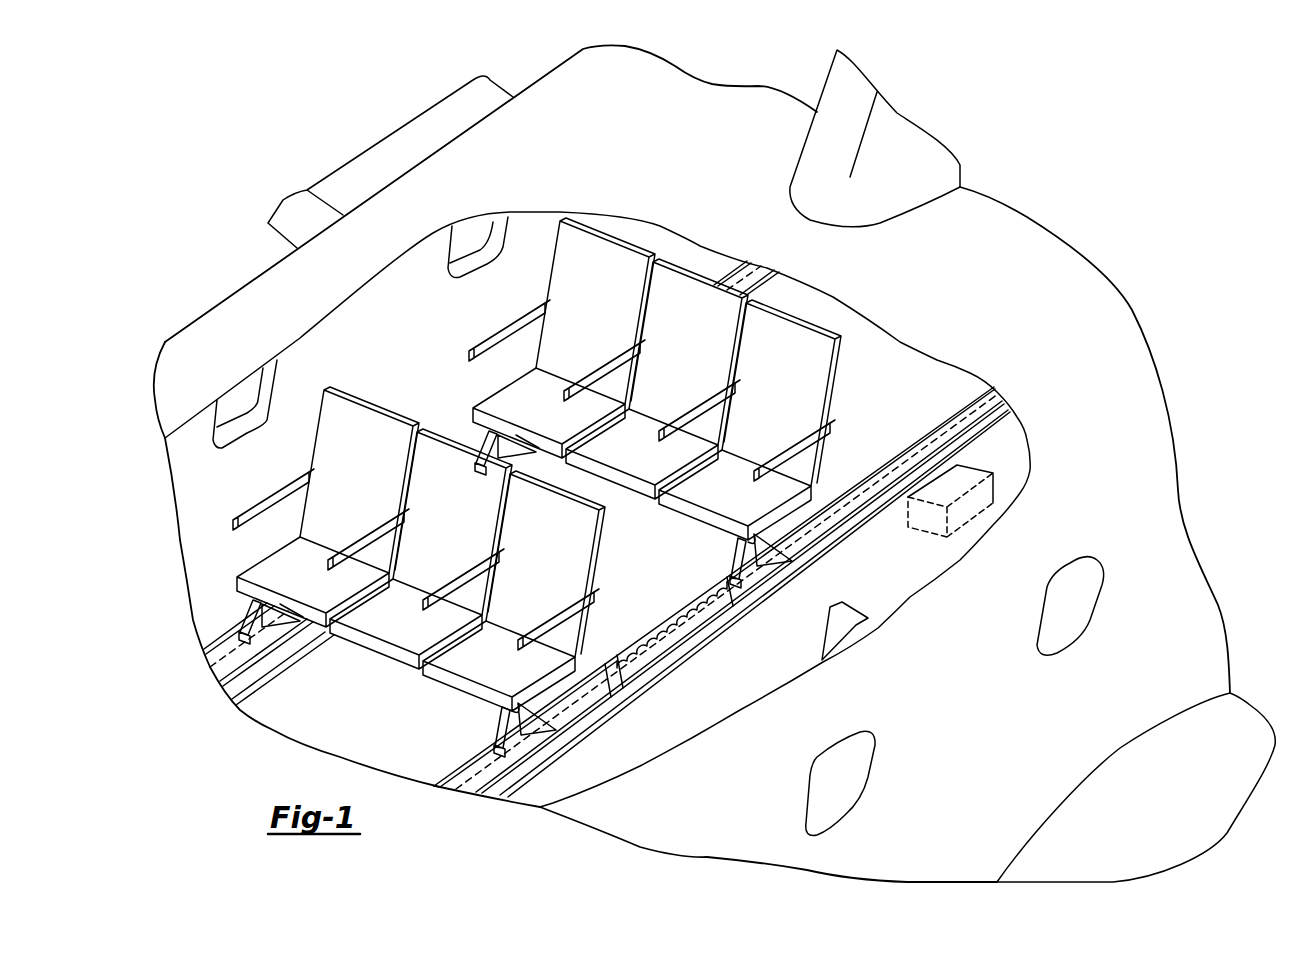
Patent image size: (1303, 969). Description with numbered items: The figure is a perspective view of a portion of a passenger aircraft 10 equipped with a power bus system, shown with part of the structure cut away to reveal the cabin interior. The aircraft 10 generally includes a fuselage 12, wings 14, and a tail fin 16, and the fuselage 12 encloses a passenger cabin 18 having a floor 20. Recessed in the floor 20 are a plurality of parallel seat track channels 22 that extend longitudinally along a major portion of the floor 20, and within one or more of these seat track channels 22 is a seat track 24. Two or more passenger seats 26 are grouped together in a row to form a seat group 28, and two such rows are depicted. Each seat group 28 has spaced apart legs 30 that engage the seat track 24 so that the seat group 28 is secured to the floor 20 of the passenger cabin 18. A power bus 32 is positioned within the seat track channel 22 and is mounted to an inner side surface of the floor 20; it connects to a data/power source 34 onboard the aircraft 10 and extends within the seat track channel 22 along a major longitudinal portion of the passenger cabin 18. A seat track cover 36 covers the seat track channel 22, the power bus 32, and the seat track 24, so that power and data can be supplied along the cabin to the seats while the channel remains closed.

The aircraft 10 is at (219, 193).
The fuselage 12 is at (227, 297).
The wings 14 is at (353, 162).
The tail fin 16 is at (893, 118).
The passenger cabin 18 is at (626, 524).
The floor 20 is at (270, 707).
The seat track channel 22 is at (773, 594).
The seat track 24 is at (660, 637).
The passenger seat 26 is at (595, 253).
The seat group 28 is at (551, 283).
The legs 30 is at (510, 714).
The power bus 32 is at (610, 686).
The data/power source 34 is at (922, 520).
The seat track cover 36 is at (470, 782).